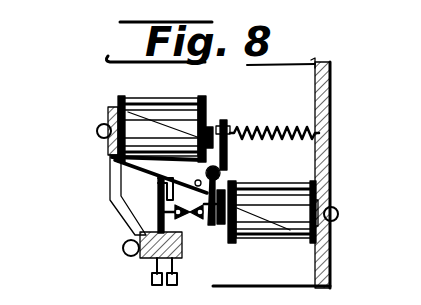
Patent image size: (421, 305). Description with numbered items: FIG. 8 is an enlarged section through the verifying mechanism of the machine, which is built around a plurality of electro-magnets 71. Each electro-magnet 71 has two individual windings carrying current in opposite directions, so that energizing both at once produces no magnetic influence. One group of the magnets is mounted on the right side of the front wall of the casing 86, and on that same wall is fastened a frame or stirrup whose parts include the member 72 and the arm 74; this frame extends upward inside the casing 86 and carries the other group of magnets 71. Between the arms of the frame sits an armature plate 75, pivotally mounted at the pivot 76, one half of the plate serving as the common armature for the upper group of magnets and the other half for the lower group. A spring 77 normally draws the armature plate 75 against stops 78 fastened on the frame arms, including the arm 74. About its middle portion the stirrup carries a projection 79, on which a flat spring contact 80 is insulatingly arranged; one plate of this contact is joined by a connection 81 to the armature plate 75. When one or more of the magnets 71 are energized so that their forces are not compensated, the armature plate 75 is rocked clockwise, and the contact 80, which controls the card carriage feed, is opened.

The electro-magnet 71 is at (167, 125).
The frame 72 is at (110, 118).
The frame arm 74 is at (230, 145).
The armature plate 75 is at (227, 123).
The pivot 76 is at (218, 176).
The spring 77 is at (283, 130).
The stop 78 is at (196, 182).
The projection 79 is at (115, 197).
The flat spring contact 80 is at (158, 200).
The connection 81 is at (187, 216).
The casing 86 is at (321, 182).